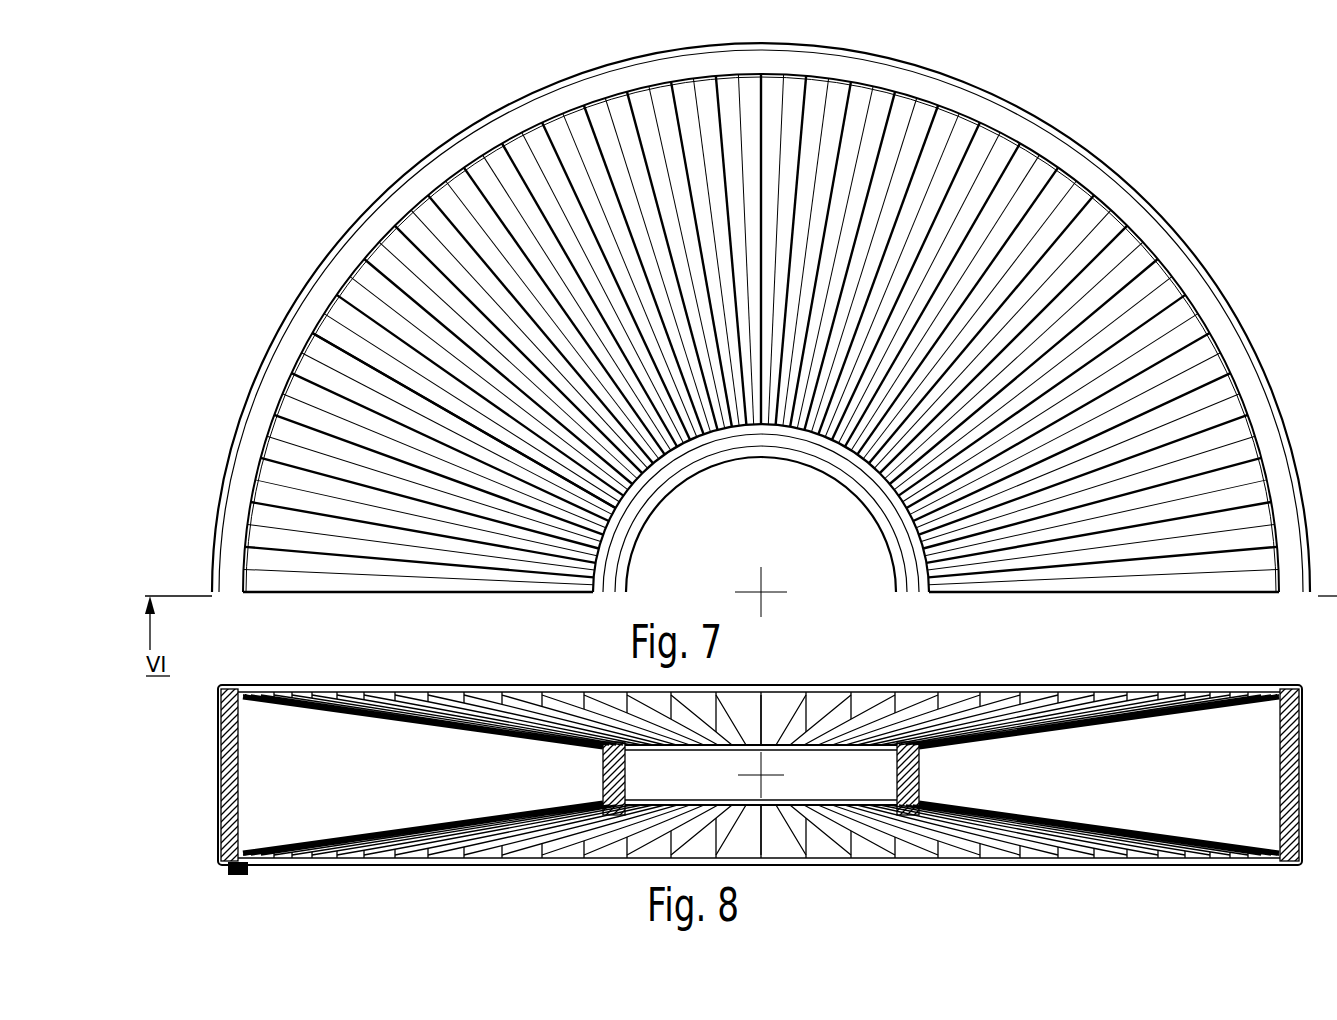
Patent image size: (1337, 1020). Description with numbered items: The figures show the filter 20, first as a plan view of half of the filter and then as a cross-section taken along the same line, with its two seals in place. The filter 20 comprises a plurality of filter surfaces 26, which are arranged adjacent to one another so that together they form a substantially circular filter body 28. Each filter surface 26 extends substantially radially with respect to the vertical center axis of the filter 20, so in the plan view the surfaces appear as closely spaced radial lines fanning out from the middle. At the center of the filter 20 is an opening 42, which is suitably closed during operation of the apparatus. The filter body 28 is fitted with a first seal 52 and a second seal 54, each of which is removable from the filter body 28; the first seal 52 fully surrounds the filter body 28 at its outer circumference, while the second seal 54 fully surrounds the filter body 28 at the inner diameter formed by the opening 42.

In FIG. 7, the filter 20 is at (254, 280).
In FIG. 8, the filter 20 is at (408, 684).
In FIG. 7, the filter surface 26 is at (300, 449).
In FIG. 8, the filter surface 26 is at (306, 799).
In FIG. 7, the filter body 28 is at (410, 229).
In FIG. 7, the opening 42 is at (830, 560).
In FIG. 7, the first seal 52 is at (463, 150).
In FIG. 8, the first seal 52 is at (218, 780).
In FIG. 7, the second seal 54 is at (719, 450).
In FIG. 8, the second seal 54 is at (868, 782).